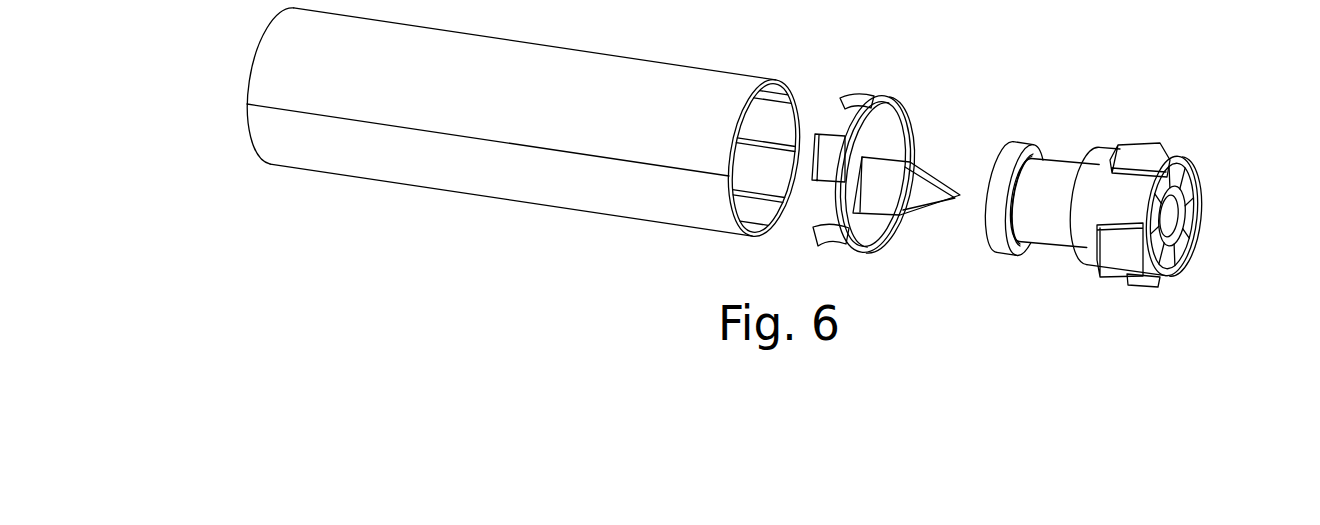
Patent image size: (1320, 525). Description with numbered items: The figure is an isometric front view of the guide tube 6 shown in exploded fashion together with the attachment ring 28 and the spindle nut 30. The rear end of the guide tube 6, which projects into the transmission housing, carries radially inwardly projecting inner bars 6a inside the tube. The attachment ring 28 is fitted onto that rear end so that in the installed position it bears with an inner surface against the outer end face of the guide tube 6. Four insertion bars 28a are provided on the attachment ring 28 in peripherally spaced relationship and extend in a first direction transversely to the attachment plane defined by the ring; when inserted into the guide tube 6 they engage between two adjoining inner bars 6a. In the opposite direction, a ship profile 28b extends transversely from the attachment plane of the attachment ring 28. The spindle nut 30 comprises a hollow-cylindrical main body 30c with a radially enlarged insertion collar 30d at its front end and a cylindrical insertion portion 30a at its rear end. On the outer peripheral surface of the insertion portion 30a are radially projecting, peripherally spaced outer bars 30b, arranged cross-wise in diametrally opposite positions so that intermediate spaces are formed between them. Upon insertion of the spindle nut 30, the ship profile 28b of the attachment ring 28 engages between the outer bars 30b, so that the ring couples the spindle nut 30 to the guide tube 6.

The guide tube 6 is at (392, 163).
The inner bars 6a is at (783, 142).
The attachment ring 28 is at (872, 160).
The insertion bars 28a is at (825, 238).
The ship profile 28b is at (910, 190).
The spindle nut 30 is at (1136, 179).
The cylindrical insertion portion 30a is at (1102, 147).
The outer bars 30b is at (1142, 157).
The hollow-cylindrical main body 30c is at (1053, 215).
The insertion collar 30d is at (1017, 145).